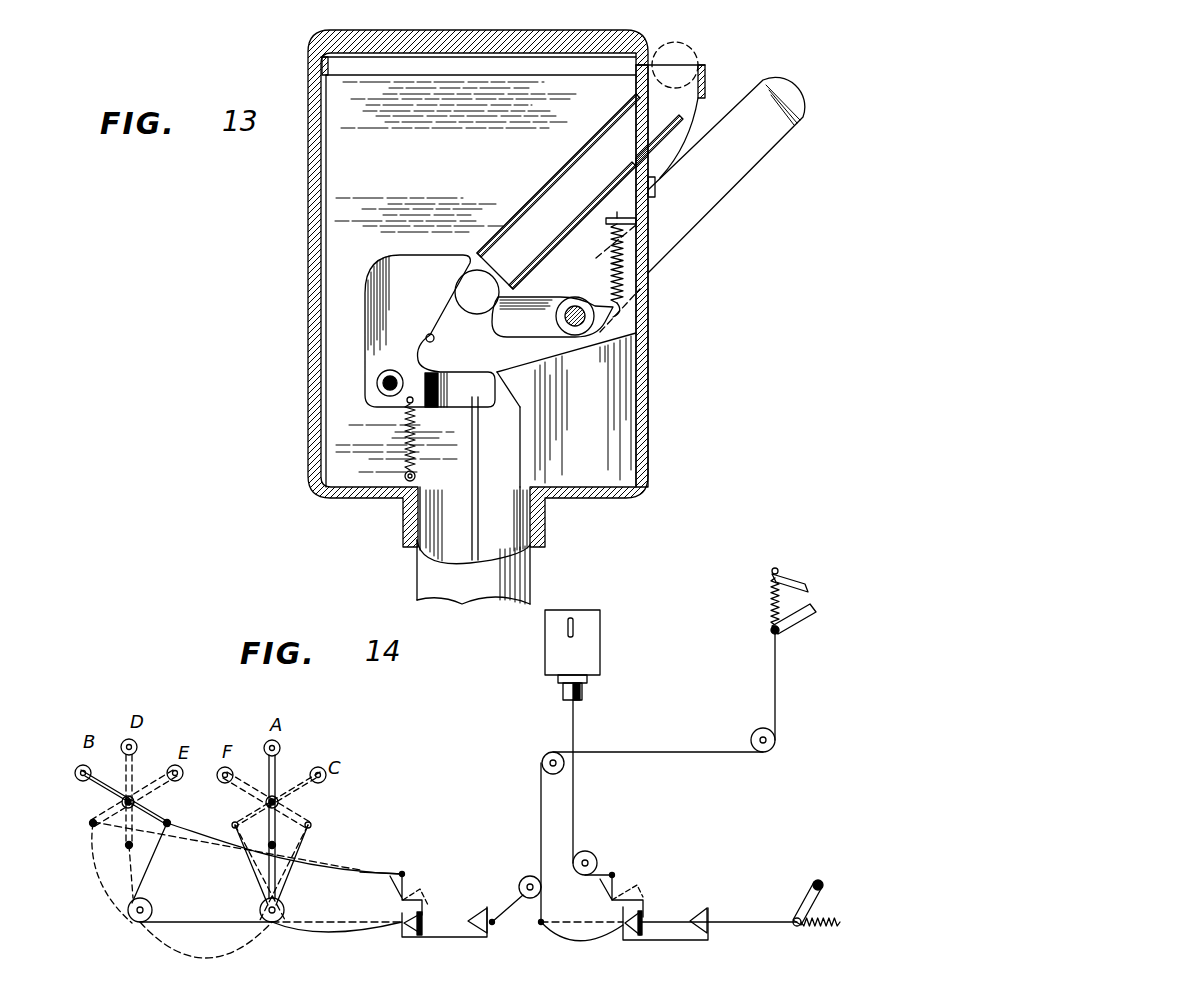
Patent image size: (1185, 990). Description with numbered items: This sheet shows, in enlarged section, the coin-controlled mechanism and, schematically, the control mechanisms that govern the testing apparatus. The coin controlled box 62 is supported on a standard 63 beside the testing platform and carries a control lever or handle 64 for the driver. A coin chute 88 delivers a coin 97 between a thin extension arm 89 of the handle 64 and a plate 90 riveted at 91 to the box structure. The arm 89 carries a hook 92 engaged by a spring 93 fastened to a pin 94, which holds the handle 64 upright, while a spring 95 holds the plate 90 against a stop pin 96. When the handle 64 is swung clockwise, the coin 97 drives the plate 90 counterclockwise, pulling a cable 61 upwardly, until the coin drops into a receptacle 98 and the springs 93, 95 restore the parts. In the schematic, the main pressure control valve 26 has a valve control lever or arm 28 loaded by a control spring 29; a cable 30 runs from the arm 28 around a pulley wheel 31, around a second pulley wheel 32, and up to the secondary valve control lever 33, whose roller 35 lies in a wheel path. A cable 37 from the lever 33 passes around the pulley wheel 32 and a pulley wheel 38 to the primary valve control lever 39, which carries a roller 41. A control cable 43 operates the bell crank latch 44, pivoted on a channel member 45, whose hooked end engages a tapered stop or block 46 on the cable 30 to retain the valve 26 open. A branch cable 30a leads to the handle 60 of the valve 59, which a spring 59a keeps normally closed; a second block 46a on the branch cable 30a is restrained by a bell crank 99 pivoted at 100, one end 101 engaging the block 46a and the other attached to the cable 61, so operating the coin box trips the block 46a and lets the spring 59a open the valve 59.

In FIG. 13, the coin controlled box 62 is at (647, 452).
In FIG. 14, the coin controlled box 62 is at (596, 658).
In FIG. 13, the standard 63 is at (533, 586).
In FIG. 14, the standard 63 is at (585, 690).
In FIG. 13, the cable 61 is at (478, 472).
In FIG. 14, the cable 61 is at (573, 808).
In FIG. 13, the control lever or handle 64 is at (720, 202).
In FIG. 13, the coin chute 88 is at (552, 178).
In FIG. 13, the thin extension arm 89 is at (520, 333).
In FIG. 13, the plate 90 is at (412, 270).
In FIG. 13, the rivet 91 is at (376, 388).
In FIG. 13, the hook 92 is at (600, 322).
In FIG. 13, the spring 93 is at (612, 252).
In FIG. 13, the pin 94 is at (656, 180).
In FIG. 13, the spring 95 is at (404, 452).
In FIG. 13, the stop pin 96 is at (458, 333).
In FIG. 13, the coin 97 is at (480, 287).
In FIG. 13, the receptacle 98 is at (566, 410).
In FIG. 14, the main pressure control valve 26 is at (816, 581).
In FIG. 14, the valve control lever or arm 28 is at (800, 618).
In FIG. 14, the control spring 29 is at (770, 613).
In FIG. 14, the cable 30 is at (777, 690).
In FIG. 14, the branch cable 30a is at (745, 925).
In FIG. 14, the pulley wheel 31 is at (775, 748).
In FIG. 14, the second pulley wheel 32 is at (275, 925).
In FIG. 14, the secondary valve control lever 33 is at (276, 790).
In FIG. 14, the roller 35 is at (281, 746).
In FIG. 14, the cable 37 is at (187, 923).
In FIG. 14, the pulley wheel 38 is at (132, 920).
In FIG. 14, the primary valve control lever 39 is at (134, 792).
In FIG. 14, the roller 41 is at (123, 787).
In FIG. 14, the control cable 43 is at (365, 872).
In FIG. 14, the angled trip or bell crank latch 44 is at (405, 900).
In FIG. 14, the channel member 45 is at (452, 938).
In FIG. 14, the tapered stop or block 46 is at (412, 931).
In FIG. 14, the second block 46a is at (632, 934).
In FIG. 14, the valve 59 is at (838, 873).
In FIG. 14, the spring 59a is at (826, 928).
In FIG. 14, the handle 60 is at (810, 905).
In FIG. 14, the bell crank 99 is at (613, 899).
In FIG. 14, the pivot 100 is at (611, 900).
In FIG. 14, the end 101 is at (643, 915).